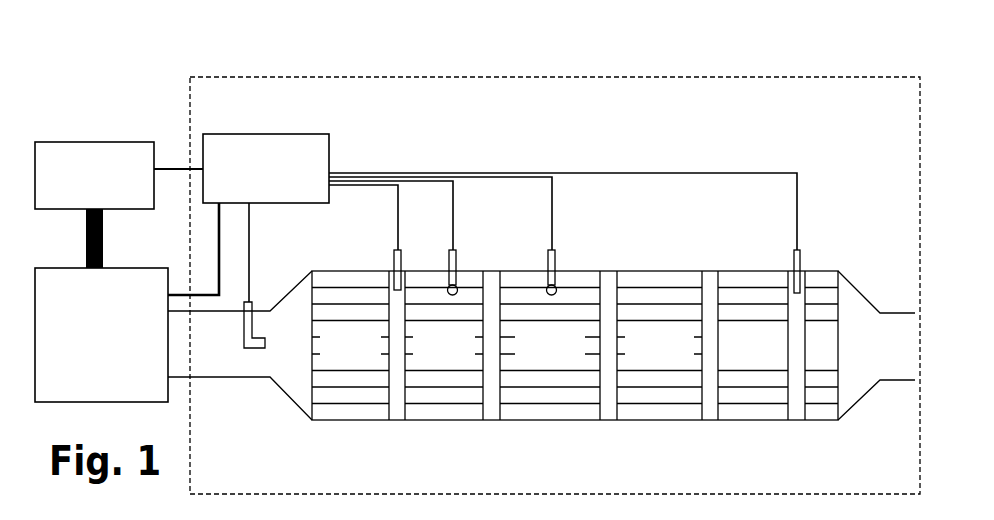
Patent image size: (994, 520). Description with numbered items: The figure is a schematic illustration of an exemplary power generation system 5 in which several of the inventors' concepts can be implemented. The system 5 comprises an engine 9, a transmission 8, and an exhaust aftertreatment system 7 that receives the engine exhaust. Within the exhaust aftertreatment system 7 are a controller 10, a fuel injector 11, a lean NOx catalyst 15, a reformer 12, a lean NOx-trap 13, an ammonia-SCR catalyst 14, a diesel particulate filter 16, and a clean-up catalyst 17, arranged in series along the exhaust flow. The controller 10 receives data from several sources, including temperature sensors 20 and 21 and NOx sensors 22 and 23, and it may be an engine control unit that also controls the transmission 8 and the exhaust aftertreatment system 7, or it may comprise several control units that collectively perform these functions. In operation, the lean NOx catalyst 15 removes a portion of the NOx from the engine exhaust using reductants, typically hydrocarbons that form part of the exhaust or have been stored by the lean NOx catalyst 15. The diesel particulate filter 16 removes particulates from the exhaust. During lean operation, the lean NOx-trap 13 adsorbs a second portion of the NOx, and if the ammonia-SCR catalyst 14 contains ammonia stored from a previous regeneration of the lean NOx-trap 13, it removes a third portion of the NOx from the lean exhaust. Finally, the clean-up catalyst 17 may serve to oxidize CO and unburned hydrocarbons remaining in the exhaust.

The power generation system 5 is at (166, 60).
The exhaust aftertreatment system 7 is at (705, 100).
The transmission 8 is at (128, 147).
The engine 9 is at (121, 277).
The controller 10 is at (313, 147).
The fuel injector 11 is at (250, 303).
The reformer 12 is at (440, 412).
The lean NOx-trap (LNT) 13 is at (541, 412).
The ammonia-SCR catalyst 14 is at (658, 412).
The lean NOx catalyst 15 is at (348, 413).
The diesel particulate filter (DPF) 16 is at (753, 412).
The clean-up catalyst 17 is at (818, 412).
The temperature sensor 20 is at (454, 252).
The temperature sensor 21 is at (552, 252).
The NOx sensor 22 is at (399, 252).
The NOx sensor 23 is at (798, 252).